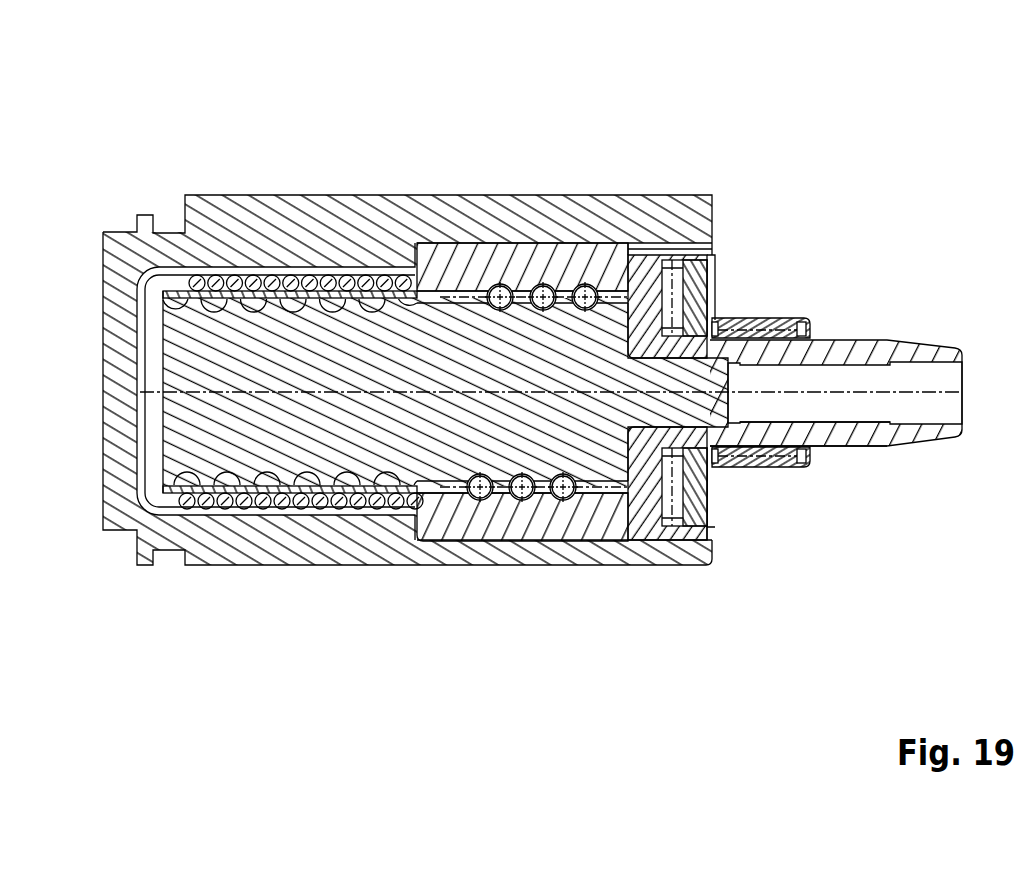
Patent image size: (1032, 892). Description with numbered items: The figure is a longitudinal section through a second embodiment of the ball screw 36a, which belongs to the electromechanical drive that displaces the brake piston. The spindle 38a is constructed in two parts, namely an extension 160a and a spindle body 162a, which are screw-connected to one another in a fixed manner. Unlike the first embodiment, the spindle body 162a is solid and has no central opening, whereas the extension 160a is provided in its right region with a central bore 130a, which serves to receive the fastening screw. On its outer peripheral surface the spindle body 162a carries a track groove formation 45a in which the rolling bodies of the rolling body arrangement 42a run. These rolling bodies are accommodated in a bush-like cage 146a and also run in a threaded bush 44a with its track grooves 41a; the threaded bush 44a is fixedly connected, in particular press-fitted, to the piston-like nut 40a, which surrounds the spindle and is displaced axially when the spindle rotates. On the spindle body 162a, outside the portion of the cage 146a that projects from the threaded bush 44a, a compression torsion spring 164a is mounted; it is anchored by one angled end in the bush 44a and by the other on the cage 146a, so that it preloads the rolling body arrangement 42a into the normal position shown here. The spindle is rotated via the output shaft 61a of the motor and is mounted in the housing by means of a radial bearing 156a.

The ball screw 36a is at (435, 177).
The piston-like nut 40a is at (352, 243).
The compression torsion spring 164a is at (250, 287).
The spindle body 162a is at (235, 423).
The track groove formation 45a is at (312, 462).
The bush-like cage 146a is at (437, 482).
The threaded bush 44a is at (540, 267).
The track grooves 41a is at (563, 448).
The rolling body arrangement 42a is at (585, 293).
The output shaft 61a is at (673, 263).
The radial bearing 156a is at (752, 320).
The spindle 38a is at (835, 339).
The central bore 130a is at (905, 378).
The extension 160a is at (847, 437).